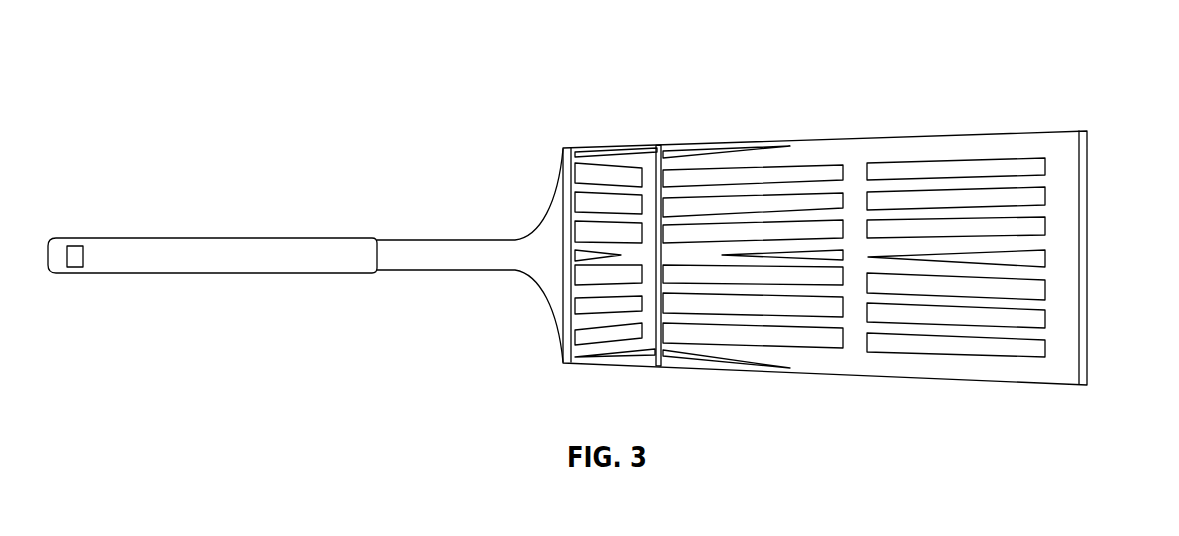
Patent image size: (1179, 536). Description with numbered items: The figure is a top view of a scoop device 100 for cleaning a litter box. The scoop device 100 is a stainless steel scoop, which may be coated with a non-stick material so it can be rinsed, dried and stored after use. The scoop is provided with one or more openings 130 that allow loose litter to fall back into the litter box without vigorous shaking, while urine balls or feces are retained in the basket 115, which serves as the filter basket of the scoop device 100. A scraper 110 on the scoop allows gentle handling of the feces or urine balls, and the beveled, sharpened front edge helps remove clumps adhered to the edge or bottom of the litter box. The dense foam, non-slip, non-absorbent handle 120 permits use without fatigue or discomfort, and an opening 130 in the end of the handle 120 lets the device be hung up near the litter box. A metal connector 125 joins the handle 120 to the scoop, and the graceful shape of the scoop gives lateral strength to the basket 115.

The scoop device 100 is at (986, 56).
The scraper 110 is at (1088, 155).
The basket 115 is at (651, 185).
The handle 120 is at (151, 258).
The metal connector 125 is at (477, 257).
The openings 130 is at (883, 198).